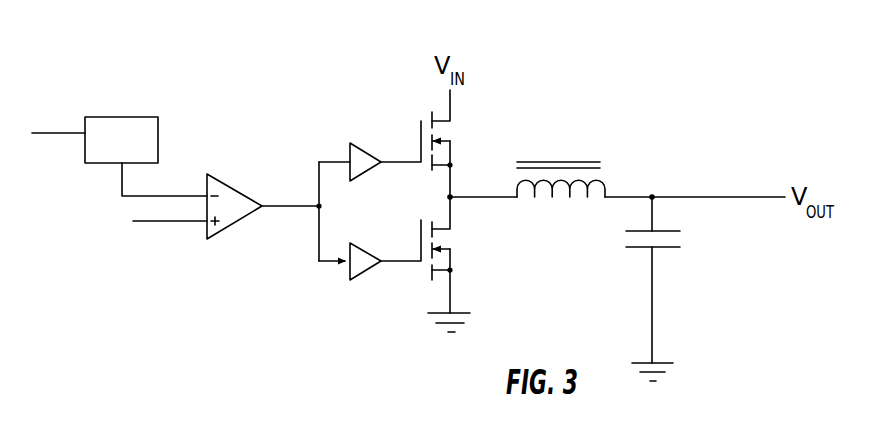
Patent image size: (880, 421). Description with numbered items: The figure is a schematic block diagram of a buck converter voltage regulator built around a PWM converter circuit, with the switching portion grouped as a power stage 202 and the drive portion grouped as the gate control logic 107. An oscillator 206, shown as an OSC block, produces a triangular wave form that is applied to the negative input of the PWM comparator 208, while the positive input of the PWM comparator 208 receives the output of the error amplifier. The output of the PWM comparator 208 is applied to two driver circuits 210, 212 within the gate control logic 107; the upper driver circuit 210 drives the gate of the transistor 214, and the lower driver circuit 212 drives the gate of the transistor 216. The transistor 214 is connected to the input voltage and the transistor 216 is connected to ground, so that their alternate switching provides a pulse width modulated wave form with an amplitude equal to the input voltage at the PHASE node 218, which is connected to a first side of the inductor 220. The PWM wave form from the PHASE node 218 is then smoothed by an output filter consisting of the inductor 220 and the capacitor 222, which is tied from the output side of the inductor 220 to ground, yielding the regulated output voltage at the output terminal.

The gate control logic 107 is at (290, 88).
The power stage 202 is at (700, 130).
The oscillator 206 is at (127, 117).
The PWM comparator 208 is at (228, 184).
The driver circuit 210 is at (368, 156).
The driver circuit 212 is at (368, 256).
The transistor 214 is at (450, 141).
The transistor 216 is at (450, 249).
The PHASE node 218 is at (451, 198).
The inductor 220 is at (607, 180).
The capacitor 222 is at (672, 238).